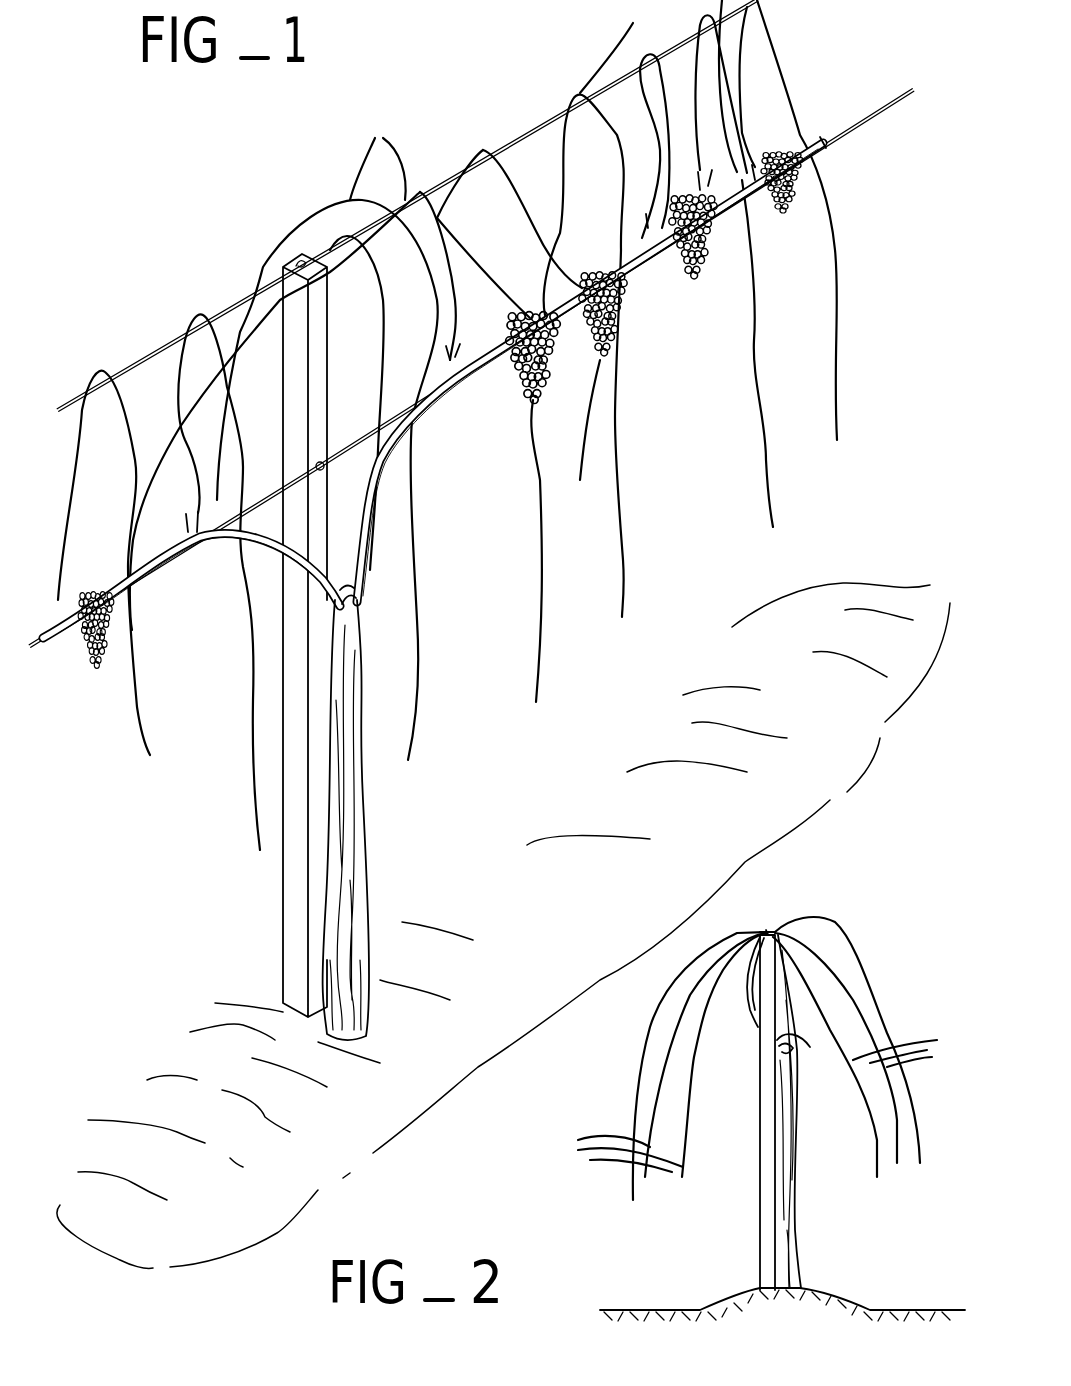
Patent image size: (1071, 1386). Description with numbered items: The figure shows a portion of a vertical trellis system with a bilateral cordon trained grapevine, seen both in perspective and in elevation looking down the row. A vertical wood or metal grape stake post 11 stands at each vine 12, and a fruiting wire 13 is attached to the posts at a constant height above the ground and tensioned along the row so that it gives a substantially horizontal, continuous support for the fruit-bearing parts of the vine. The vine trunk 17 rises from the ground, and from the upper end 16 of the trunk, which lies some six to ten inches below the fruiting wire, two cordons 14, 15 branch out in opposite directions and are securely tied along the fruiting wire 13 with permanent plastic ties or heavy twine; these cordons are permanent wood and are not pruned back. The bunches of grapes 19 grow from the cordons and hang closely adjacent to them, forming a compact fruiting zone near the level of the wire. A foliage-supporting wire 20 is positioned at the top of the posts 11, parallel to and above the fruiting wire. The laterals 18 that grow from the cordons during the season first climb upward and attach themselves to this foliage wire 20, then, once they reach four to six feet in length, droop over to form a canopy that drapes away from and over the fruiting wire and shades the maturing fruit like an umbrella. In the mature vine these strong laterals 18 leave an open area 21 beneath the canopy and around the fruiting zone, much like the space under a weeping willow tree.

In FIG. 1, the grape stake post 11 is at (293, 865).
In FIG. 2, the grape stake post 11 is at (762, 1237).
In FIG. 1, the vine 12 is at (372, 885).
In FIG. 2, the vine 12 is at (817, 1255).
In FIG. 1, the fruiting wire 13 is at (893, 105).
In FIG. 2, the fruiting wire 13 is at (802, 1055).
In FIG. 1, the cordon 14 is at (173, 560).
In FIG. 1, the cordon 15 is at (474, 378).
In FIG. 1, the upper end of the vine trunk 16 is at (350, 610).
In FIG. 1, the vine trunk 17 is at (353, 807).
In FIG. 2, the vine trunk 17 is at (797, 1193).
In FIG. 1, the laterals 18 is at (163, 760).
In FIG. 2, the laterals 18 is at (751, 1058).
In FIG. 1, the bunches of grapes 19 is at (700, 258).
In FIG. 1, the foliage-supporting wire 20 is at (143, 360).
In FIG. 2, the foliage-supporting wire 20 is at (770, 927).
In FIG. 2, the open area 21 is at (706, 1112).